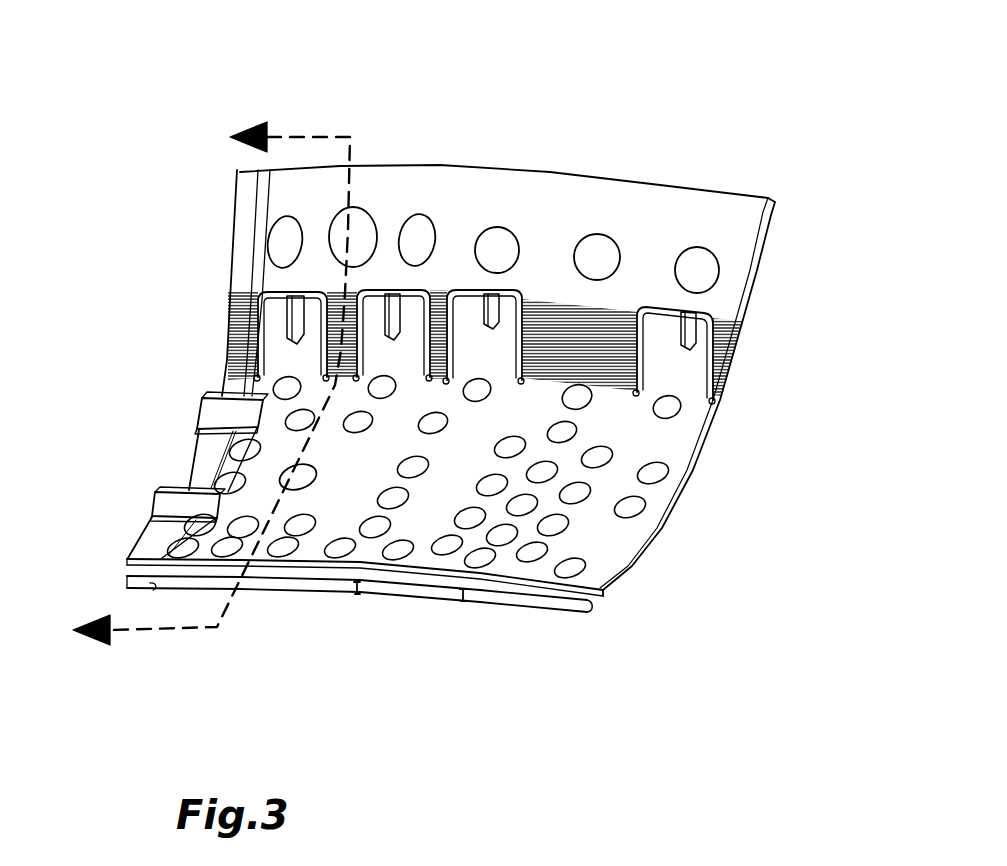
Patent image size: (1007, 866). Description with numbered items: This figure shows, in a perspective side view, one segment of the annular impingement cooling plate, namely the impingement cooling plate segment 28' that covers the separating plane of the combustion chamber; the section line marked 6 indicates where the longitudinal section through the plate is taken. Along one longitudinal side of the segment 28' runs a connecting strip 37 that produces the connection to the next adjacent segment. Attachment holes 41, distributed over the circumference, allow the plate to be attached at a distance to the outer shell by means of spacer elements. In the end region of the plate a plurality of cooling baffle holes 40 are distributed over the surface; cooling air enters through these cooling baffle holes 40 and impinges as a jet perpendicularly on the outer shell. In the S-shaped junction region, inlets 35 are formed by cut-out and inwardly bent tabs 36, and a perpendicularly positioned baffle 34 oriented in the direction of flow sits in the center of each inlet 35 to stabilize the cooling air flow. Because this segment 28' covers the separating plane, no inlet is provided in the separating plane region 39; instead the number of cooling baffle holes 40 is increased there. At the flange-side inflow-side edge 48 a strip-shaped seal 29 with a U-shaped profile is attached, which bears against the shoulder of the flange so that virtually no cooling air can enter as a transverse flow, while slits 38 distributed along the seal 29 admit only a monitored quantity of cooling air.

The impingement cooling plate segment 28' is at (507, 435).
The seal 29 is at (525, 590).
The baffle 34 is at (297, 313).
The inlets 35 is at (414, 224).
The tabs 36 is at (277, 340).
The connecting strip 37 is at (203, 460).
The slits 38 is at (452, 605).
The separating plane region 39 is at (598, 324).
The cooling baffle holes 40 is at (584, 401).
The attachment holes 41 is at (701, 269).
The inflow-side edge 48 is at (297, 576).
The section line 6 is at (196, 384).